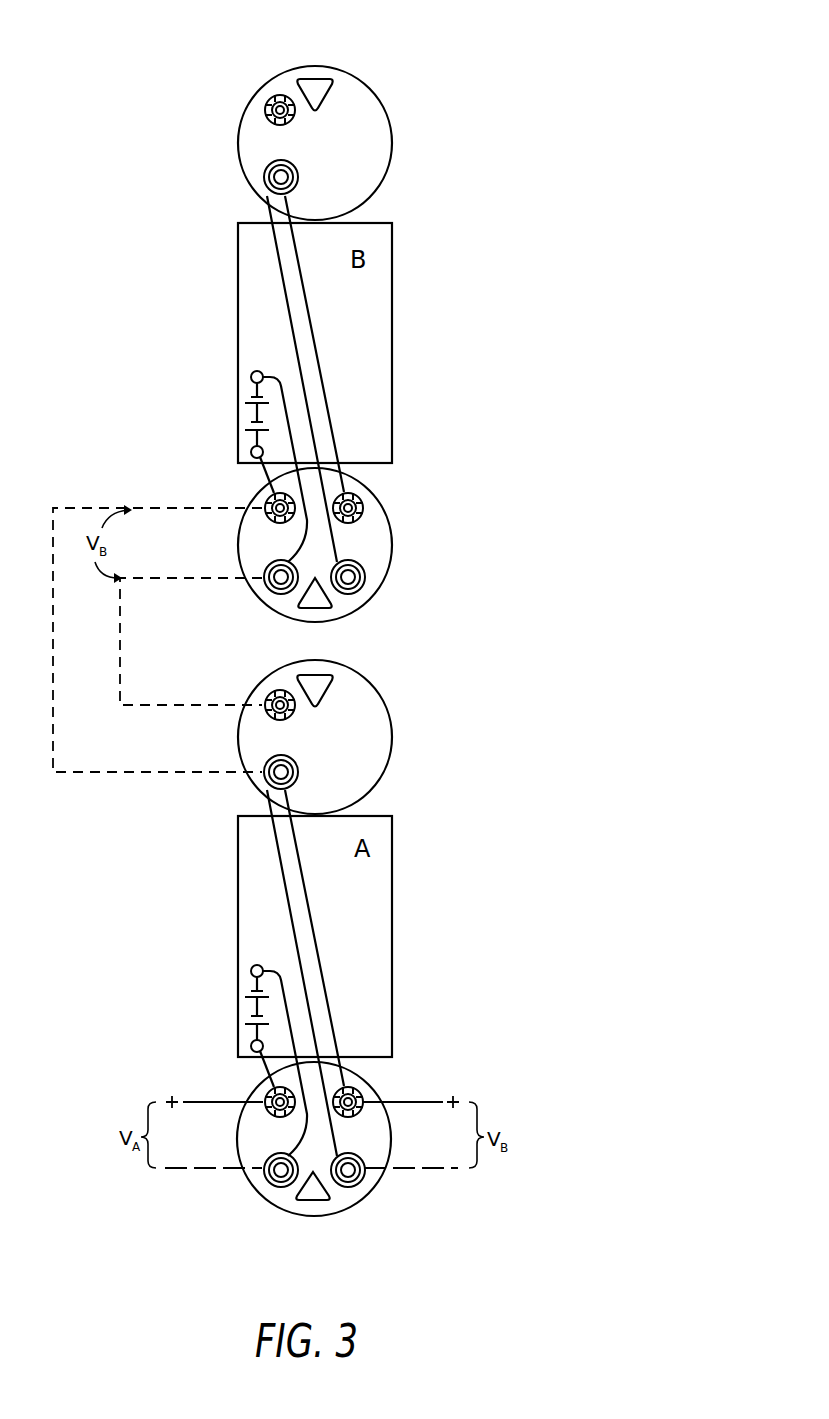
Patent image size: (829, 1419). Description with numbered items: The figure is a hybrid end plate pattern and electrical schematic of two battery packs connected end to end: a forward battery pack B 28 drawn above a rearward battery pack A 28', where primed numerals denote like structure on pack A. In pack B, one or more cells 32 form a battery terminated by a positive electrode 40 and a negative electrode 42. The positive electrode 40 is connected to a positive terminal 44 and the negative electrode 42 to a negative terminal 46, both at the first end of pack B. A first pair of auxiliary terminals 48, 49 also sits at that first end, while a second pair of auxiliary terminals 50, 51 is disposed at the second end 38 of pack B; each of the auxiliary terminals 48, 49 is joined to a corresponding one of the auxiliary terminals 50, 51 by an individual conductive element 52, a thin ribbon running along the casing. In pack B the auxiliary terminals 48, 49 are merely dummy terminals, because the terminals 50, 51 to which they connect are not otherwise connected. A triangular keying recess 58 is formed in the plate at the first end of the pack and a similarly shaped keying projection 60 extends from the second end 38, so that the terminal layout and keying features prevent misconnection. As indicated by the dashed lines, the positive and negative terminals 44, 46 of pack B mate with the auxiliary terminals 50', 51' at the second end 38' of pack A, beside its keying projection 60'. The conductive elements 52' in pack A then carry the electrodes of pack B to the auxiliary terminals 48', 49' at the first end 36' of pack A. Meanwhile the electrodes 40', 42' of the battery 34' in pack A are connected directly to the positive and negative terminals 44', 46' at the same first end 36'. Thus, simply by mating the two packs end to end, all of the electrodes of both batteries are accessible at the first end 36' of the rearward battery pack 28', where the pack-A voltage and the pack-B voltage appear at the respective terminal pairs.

The second end 38 is at (356, 143).
The auxiliary terminal 51 is at (237, 71).
The auxiliary terminal 50 is at (228, 155).
The keying projection 60 is at (356, 64).
The battery pack 28 is at (358, 343).
The conductive element 52 is at (308, 379).
The negative electrode 42 is at (231, 441).
The cell 32 is at (240, 423).
The positive electrode 40 is at (208, 459).
The positive terminal 44 is at (222, 495).
The auxiliary terminal 48 is at (395, 498).
The negative terminal 46 is at (240, 591).
The auxiliary terminal 49 is at (396, 568).
The keying recess 58 is at (325, 610).
The second end 38' is at (360, 737).
The auxiliary terminal 51' is at (234, 679).
The auxiliary terminal 50' is at (236, 753).
The keying projection 60' is at (374, 685).
The battery pack 28' is at (363, 936).
The conductive element 52' is at (313, 973).
The negative electrode 42' is at (229, 1038).
The battery 34' is at (206, 1006).
The positive electrode 40' is at (210, 1052).
The positive terminal 44' is at (236, 1087).
The auxiliary terminal 48' is at (394, 1090).
The negative terminal 46' is at (238, 1188).
The auxiliary terminal 49' is at (387, 1191).
The first end 36' is at (338, 1216).